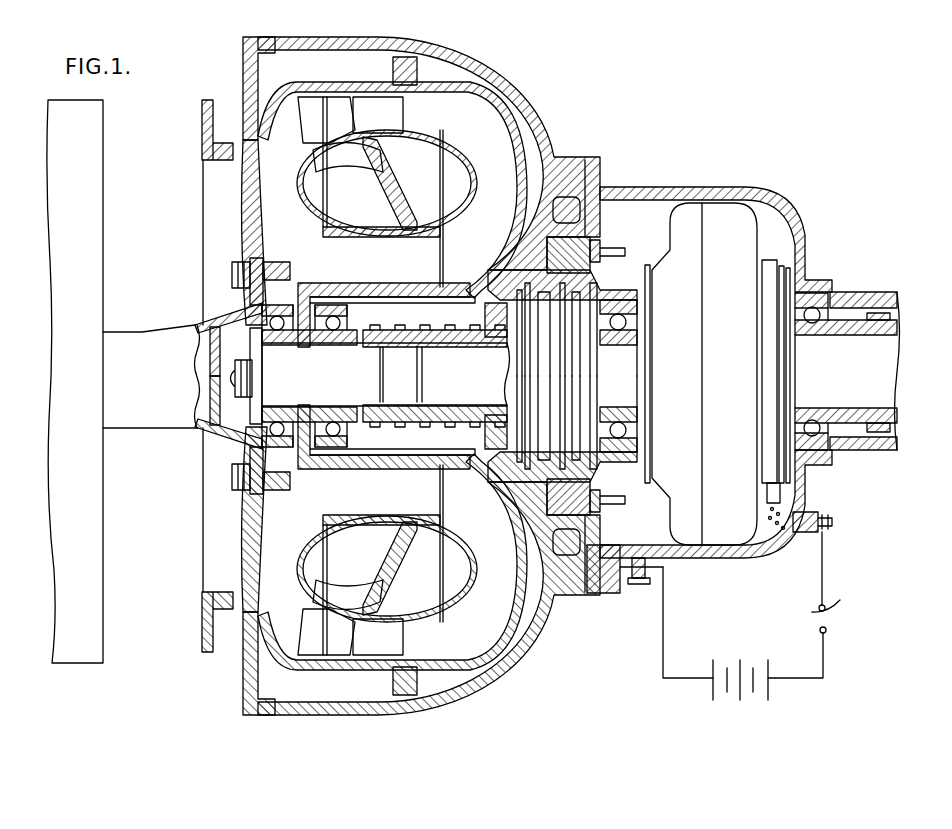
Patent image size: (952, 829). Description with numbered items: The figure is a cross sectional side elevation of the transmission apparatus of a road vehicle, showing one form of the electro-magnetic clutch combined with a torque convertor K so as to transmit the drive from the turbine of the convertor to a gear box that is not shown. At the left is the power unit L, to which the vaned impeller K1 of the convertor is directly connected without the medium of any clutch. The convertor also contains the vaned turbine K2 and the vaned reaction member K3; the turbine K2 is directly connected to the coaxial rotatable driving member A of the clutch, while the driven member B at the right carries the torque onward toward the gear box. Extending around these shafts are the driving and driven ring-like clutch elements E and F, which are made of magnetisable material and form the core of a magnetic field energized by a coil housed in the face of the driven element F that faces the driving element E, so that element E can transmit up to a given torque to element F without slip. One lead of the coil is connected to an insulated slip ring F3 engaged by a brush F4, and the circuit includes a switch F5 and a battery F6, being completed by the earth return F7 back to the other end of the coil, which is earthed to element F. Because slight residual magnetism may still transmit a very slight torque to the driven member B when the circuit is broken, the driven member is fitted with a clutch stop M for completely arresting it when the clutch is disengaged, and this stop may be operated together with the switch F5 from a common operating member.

The power unit L is at (90, 289).
The torque convertor K is at (500, 75).
The vaned impeller K1 is at (505, 143).
The vaned turbine K2 is at (313, 92).
The vaned reaction member K3 is at (387, 376).
The driving member A is at (386, 376).
The driving clutch element E is at (673, 374).
The driven clutch element F is at (729, 374).
The insulated slip ring F3 is at (767, 267).
The brush F4 is at (790, 495).
The switch F5 is at (817, 605).
The battery F6 is at (745, 660).
The earth return F7 is at (647, 586).
The driven member B is at (847, 371).
The clutch stop M is at (877, 321).